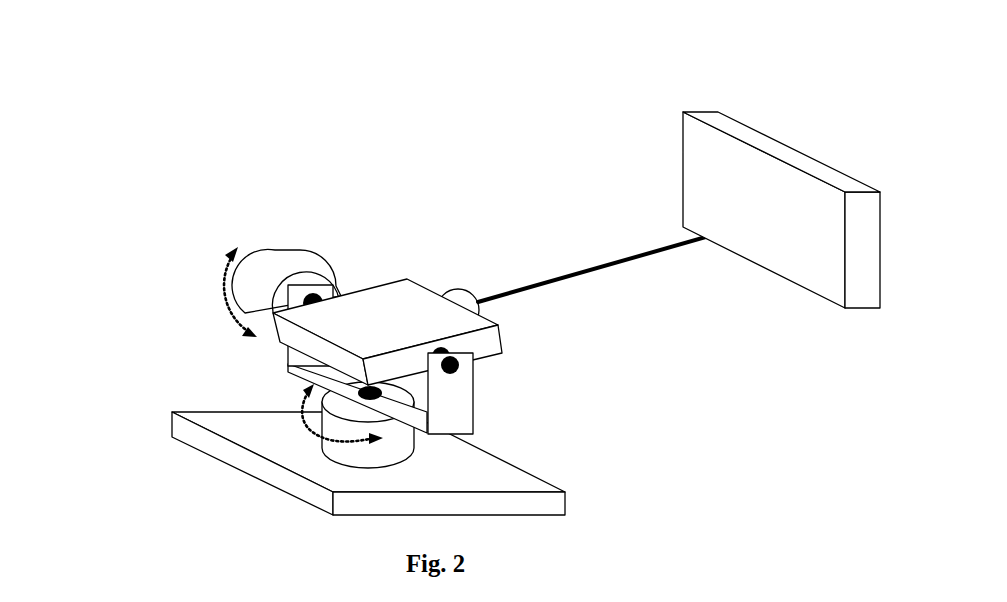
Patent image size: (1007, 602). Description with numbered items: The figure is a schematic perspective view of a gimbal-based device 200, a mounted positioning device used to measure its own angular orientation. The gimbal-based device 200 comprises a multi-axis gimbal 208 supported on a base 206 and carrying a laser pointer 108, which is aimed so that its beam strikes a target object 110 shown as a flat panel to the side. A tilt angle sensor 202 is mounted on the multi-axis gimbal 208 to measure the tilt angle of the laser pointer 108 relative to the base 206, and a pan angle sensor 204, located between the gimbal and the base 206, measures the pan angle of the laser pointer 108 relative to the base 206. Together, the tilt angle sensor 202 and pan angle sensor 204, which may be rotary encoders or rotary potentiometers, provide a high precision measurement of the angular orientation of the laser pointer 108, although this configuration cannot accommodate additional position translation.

The gimbal-based device 200 is at (95, 66).
The tilt angle sensor 202 is at (272, 260).
The pan angle sensor 204 is at (342, 452).
The base 206 is at (560, 505).
The multi-axis gimbal 208 is at (466, 294).
The laser pointer 108 is at (531, 265).
The target object 110 is at (700, 163).